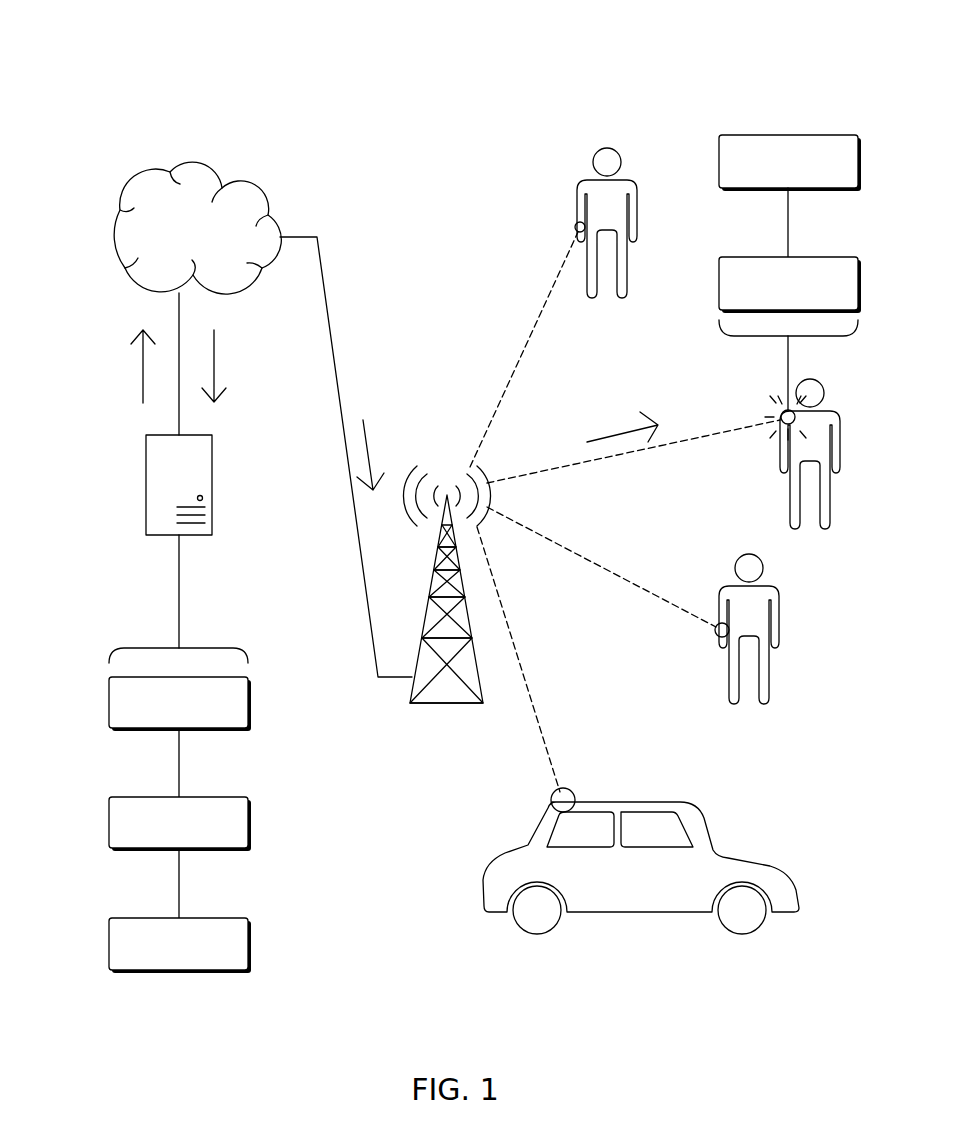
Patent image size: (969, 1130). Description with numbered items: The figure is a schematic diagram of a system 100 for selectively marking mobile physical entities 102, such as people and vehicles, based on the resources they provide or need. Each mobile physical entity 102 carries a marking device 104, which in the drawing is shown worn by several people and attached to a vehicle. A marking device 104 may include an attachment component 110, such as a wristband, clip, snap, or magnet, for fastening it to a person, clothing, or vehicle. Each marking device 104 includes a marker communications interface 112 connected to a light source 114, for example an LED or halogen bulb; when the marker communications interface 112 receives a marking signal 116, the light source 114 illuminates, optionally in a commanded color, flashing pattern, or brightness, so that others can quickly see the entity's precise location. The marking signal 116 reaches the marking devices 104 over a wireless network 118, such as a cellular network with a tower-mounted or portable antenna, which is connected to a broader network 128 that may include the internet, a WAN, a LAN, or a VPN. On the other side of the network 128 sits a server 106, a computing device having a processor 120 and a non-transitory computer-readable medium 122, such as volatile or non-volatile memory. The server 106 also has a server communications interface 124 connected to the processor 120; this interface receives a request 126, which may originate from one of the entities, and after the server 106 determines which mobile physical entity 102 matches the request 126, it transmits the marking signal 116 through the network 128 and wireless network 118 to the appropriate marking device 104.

The system 100 is at (172, 25).
The mobile physical entity 102 is at (640, 212).
The marking device 104 is at (642, 496).
The server 106 is at (145, 486).
The attachment component 110 is at (575, 232).
The marker communications interface 112 is at (829, 256).
The light source 114 is at (829, 134).
The marking signal 116 is at (218, 366).
The wireless network 118 is at (411, 689).
The processor 120 is at (108, 822).
The non-transitory computer-readable medium 122 is at (108, 946).
The server communications interface 124 is at (108, 702).
The request 126 is at (139, 366).
The network 128 is at (186, 168).